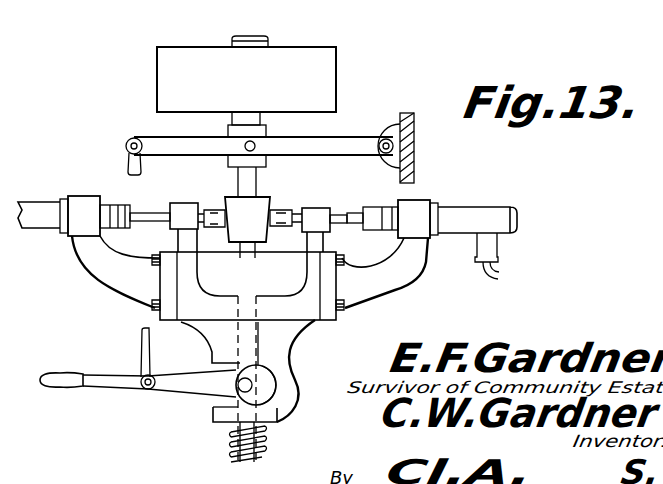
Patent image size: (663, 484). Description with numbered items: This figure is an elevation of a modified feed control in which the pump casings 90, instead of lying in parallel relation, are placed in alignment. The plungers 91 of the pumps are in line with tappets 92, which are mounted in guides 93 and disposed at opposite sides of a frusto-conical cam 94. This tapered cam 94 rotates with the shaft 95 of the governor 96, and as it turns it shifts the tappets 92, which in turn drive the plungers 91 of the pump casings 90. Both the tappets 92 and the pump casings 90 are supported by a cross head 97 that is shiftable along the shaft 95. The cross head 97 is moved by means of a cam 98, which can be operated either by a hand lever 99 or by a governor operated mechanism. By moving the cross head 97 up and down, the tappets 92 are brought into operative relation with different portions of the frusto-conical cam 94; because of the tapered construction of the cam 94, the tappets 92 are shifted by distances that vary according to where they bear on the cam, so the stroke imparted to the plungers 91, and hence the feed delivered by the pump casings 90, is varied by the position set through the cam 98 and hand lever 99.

The pump casings 90 is at (476, 189).
The plungers 91 is at (353, 229).
The tappets 92 is at (342, 212).
The guides 93 is at (310, 208).
The frusto-conical cam 94 is at (250, 227).
The shaft 95 is at (220, 179).
The governor 96 is at (334, 76).
The cross head 97 is at (315, 324).
The cam 98 is at (263, 393).
The hand lever 99 is at (126, 388).